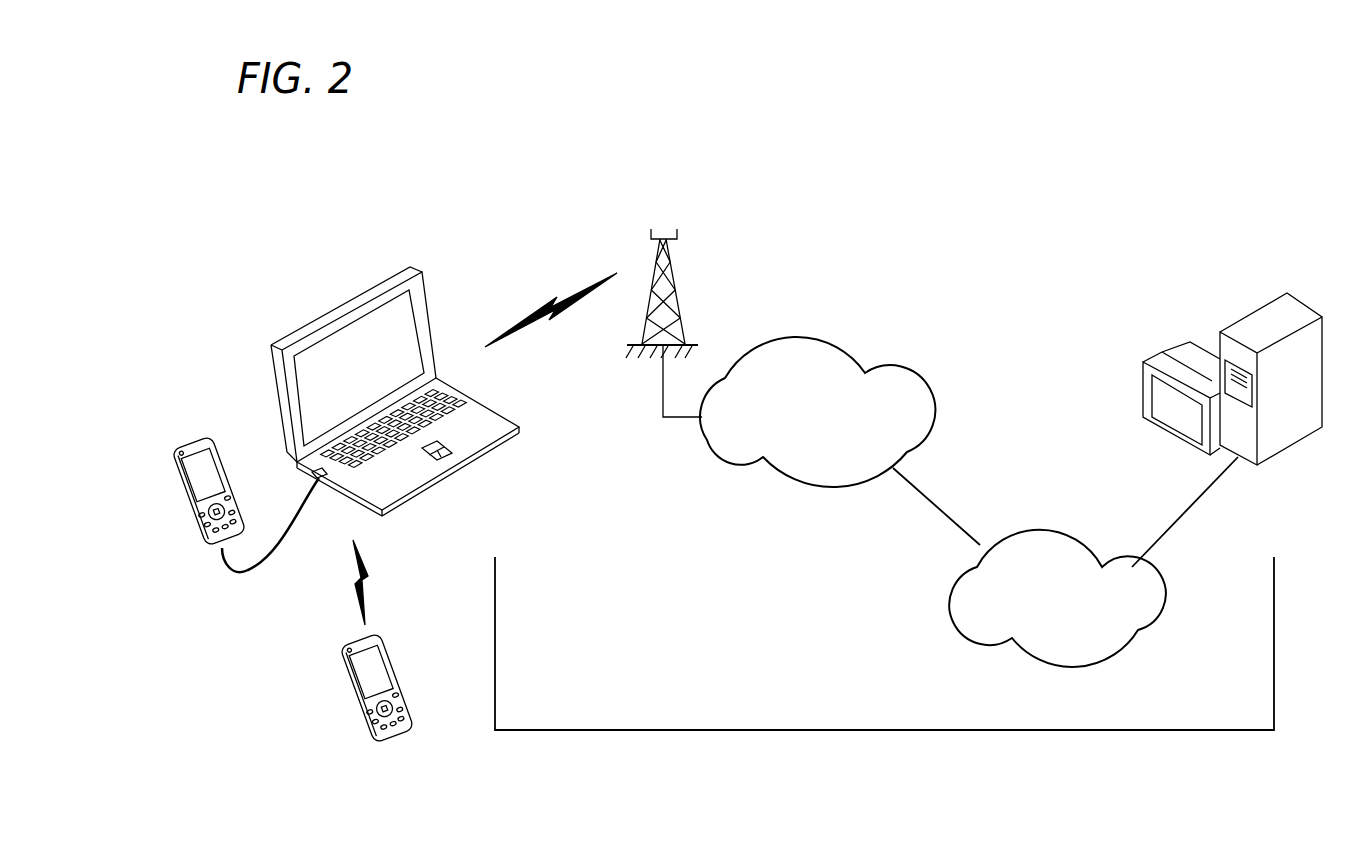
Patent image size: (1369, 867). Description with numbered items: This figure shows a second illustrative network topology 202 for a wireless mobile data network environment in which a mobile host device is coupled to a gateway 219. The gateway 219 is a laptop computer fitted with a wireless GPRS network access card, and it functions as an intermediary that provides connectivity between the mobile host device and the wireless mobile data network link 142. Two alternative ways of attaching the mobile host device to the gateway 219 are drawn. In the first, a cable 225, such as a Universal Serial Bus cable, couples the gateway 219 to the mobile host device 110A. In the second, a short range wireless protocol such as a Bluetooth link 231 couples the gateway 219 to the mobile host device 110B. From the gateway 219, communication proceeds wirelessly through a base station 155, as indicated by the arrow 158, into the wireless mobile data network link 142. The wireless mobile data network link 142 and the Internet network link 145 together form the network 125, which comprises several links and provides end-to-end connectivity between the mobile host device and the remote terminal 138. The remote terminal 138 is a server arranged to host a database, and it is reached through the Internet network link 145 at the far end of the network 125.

The second illustrative network topology 202 is at (827, 146).
The gateway 219 is at (341, 303).
The mobile host device 110A is at (198, 436).
The mobile host device 110B is at (379, 746).
The cable 225 is at (221, 568).
The Bluetooth link 231 is at (305, 611).
The arrow 158 is at (583, 355).
The base station 155 is at (673, 281).
The wireless mobile data network link 142 is at (826, 337).
The Internet network link 145 is at (1025, 530).
The remote terminal 138 is at (1257, 312).
The network 125 is at (883, 730).